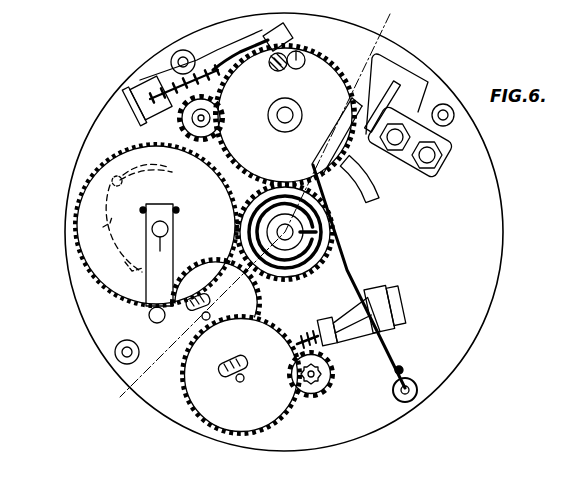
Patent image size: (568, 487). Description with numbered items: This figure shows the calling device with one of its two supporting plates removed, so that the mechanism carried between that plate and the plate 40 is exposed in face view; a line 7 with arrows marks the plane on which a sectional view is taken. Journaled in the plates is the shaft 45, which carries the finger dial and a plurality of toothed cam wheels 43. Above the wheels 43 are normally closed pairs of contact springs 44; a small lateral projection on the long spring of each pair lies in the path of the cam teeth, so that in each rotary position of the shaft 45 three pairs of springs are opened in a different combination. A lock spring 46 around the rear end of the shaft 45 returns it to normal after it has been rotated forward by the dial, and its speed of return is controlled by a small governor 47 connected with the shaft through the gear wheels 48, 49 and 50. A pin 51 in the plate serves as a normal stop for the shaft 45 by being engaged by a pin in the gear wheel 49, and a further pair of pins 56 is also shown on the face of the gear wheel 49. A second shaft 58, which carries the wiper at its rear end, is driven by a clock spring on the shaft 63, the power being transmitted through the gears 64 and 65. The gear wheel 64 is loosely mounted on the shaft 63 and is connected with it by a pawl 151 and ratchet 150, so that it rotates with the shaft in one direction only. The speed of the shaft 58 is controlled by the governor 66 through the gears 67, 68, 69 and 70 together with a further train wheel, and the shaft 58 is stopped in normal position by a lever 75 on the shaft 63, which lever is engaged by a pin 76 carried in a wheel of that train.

The section line 7- 7 is at (384, 20).
The plate 40 is at (495, 192).
The toothed cam wheels 43 is at (368, 256).
The pairs of contact springs 44 is at (397, 70).
The shaft 45 is at (270, 232).
The lock spring 46 is at (333, 262).
The small governor 47 is at (155, 88).
The gear wheel 48 is at (173, 128).
The gear wheel 49 is at (327, 72).
The gear wheel 50 is at (338, 222).
The pin 51 is at (245, 50).
The pins 56 is at (298, 55).
The shaft 58 is at (200, 314).
The shaft 63 is at (212, 258).
The gear wheel 64 is at (78, 203).
The gear 65 is at (200, 311).
The governor 66 is at (336, 347).
The gear 67 is at (322, 394).
The gear 68 is at (310, 389).
The gear 69 is at (228, 432).
The gear 70 is at (184, 386).
The lever 75 is at (167, 270).
The pin 76 is at (148, 314).
The ratchet 150 is at (78, 238).
The pawl 151 is at (93, 162).